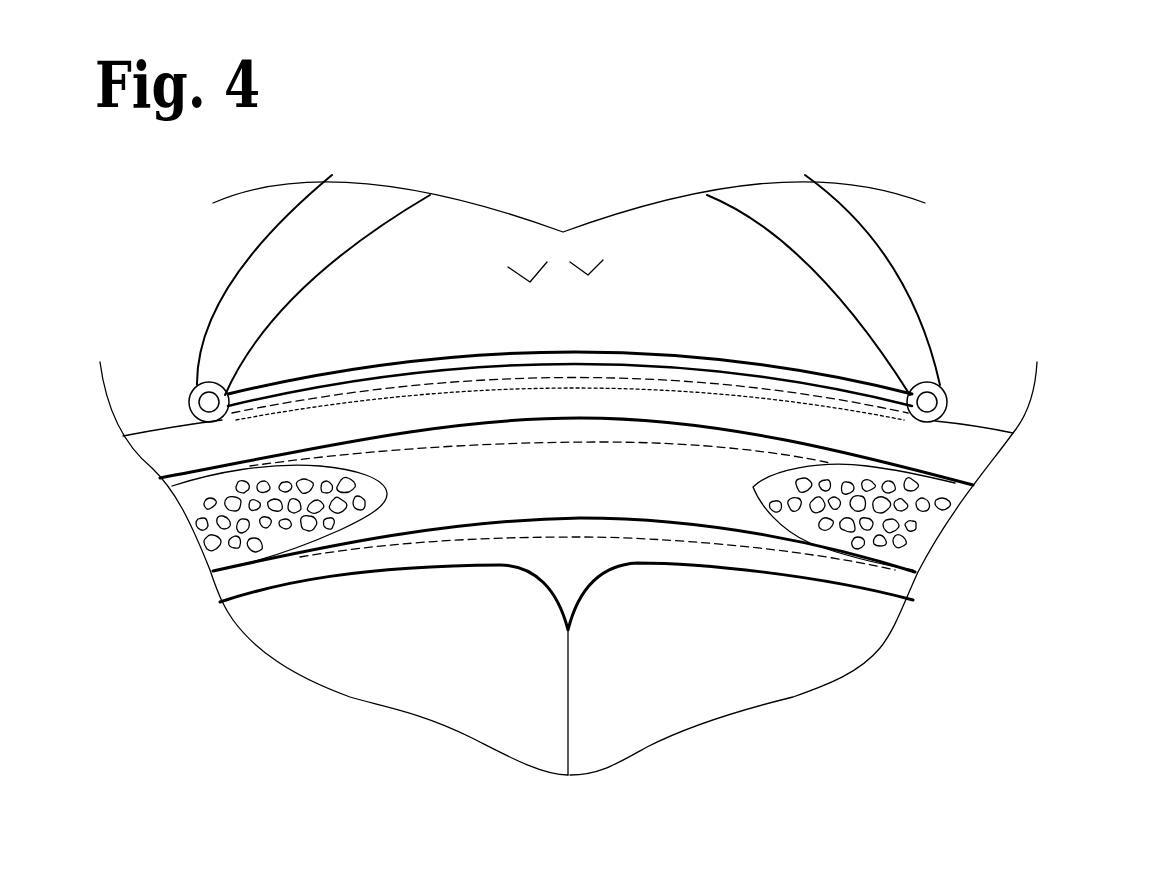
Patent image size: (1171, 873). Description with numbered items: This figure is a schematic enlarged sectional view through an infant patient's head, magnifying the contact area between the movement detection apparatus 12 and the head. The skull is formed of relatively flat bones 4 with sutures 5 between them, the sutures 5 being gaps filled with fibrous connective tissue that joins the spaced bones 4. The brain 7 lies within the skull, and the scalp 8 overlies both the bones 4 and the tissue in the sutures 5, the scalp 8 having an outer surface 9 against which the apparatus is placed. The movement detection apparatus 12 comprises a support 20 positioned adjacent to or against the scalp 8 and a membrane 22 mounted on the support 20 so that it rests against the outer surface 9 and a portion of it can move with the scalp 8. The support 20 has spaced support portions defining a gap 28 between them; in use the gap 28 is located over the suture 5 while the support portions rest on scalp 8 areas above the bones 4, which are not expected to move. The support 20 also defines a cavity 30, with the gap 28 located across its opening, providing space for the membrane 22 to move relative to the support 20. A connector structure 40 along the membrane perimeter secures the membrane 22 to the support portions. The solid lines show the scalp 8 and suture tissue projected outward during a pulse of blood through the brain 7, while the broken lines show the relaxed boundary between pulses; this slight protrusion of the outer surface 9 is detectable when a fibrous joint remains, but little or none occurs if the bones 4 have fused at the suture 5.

The movement detection apparatus 12 is at (190, 280).
The support 20 is at (807, 215).
The membrane 22 is at (687, 362).
The cavity 30 is at (530, 282).
The gap 28 is at (588, 275).
The connector structure 40 is at (977, 420).
The outer surface 9 is at (351, 383).
The scalp 8 is at (770, 431).
The bones 4 is at (227, 523).
The sutures 5 is at (567, 480).
The brain 7 is at (397, 638).